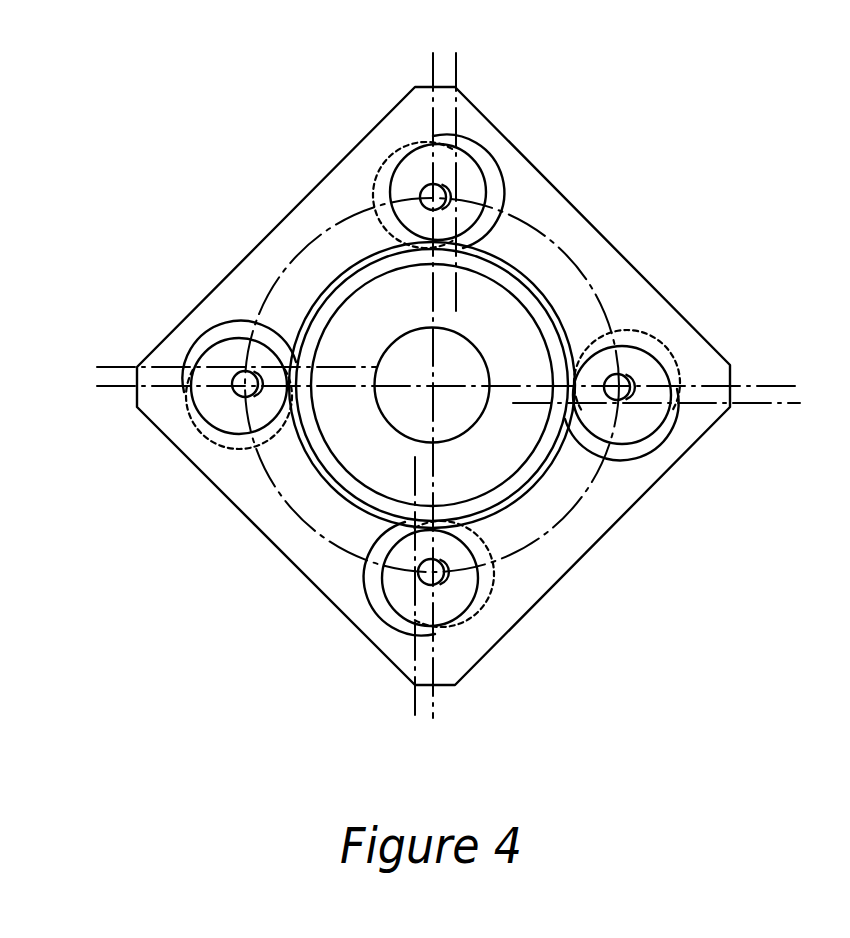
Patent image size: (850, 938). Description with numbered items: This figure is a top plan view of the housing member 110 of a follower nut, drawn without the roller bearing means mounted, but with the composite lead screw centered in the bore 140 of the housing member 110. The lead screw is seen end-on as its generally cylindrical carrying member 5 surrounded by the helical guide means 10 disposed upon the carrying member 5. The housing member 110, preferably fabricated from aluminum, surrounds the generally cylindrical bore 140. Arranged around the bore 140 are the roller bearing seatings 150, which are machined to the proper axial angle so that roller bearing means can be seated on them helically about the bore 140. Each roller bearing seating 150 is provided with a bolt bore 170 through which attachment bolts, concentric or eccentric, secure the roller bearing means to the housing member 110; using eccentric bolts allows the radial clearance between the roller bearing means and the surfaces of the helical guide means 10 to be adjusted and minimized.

The carrying member 5 is at (352, 460).
The helical guide means 10 is at (518, 487).
The housing member 110 is at (580, 240).
The bore 140 is at (572, 308).
The roller bearing seatings 150 is at (395, 173).
The bolt bores 170 is at (447, 190).